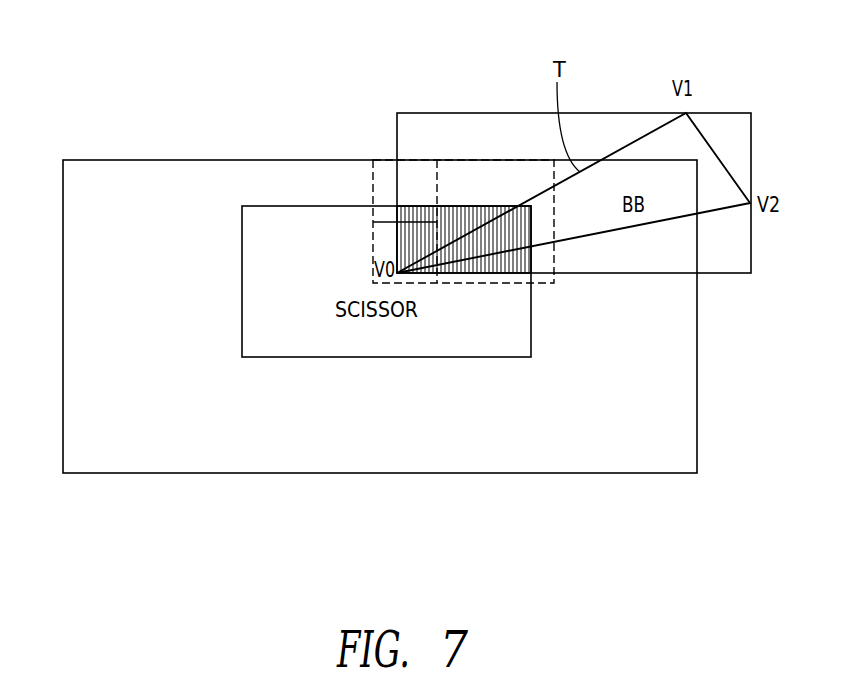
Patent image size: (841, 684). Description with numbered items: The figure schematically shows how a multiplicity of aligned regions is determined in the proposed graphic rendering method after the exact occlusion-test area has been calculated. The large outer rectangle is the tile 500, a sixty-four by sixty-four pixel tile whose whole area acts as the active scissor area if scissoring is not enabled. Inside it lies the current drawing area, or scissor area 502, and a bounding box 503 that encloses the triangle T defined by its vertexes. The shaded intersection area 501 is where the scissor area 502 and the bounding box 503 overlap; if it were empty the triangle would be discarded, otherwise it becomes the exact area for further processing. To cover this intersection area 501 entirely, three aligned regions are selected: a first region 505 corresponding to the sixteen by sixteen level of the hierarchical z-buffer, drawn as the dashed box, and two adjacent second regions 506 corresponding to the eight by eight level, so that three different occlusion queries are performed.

The tile 500 is at (63, 318).
The intersection area 501 is at (460, 208).
The scissor area 502 is at (242, 238).
The bounding box 503 is at (630, 113).
The first region 505 is at (507, 284).
The second regions 506 is at (372, 187).